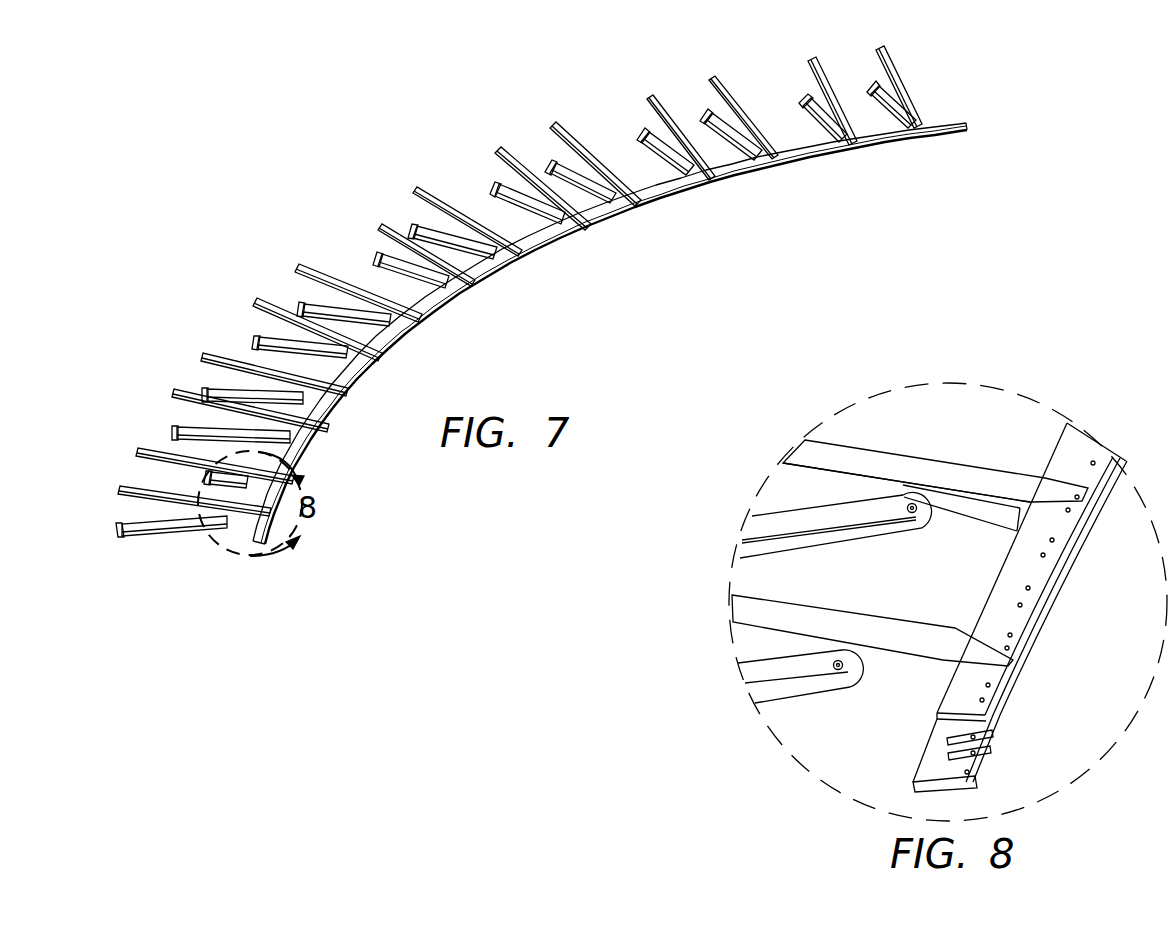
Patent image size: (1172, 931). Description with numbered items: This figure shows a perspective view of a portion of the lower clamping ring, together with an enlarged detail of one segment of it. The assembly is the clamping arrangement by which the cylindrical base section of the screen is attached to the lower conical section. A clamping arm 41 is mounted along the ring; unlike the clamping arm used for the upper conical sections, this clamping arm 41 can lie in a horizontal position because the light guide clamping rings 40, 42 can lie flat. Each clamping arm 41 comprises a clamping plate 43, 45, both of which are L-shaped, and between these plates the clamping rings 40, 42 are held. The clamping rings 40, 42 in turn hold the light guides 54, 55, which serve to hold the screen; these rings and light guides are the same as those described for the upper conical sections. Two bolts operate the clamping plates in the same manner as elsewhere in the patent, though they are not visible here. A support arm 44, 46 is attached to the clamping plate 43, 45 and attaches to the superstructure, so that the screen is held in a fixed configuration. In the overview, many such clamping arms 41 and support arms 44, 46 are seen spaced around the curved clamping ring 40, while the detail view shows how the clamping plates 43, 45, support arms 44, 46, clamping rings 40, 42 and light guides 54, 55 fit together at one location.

In FIG. 7, the clamping ring 40 is at (361, 383).
In FIG. 8, the clamping ring 40 is at (993, 672).
In FIG. 7, the clamping arm 41 is at (712, 97).
In FIG. 8, the clamping arm 41 is at (918, 447).
In FIG. 8, the clamping ring 42 is at (980, 778).
In FIG. 7, the clamping plate 43 is at (836, 88).
In FIG. 8, the clamping plate 43 is at (972, 468).
In FIG. 7, the support arm 44 is at (817, 123).
In FIG. 8, the support arm 44 is at (835, 538).
In FIG. 8, the clamping plate 45 is at (975, 512).
In FIG. 7, the support arm 46 is at (812, 98).
In FIG. 8, the light guide 54 is at (990, 755).
In FIG. 8, the light guide 55 is at (990, 729).